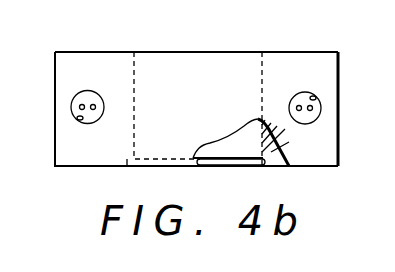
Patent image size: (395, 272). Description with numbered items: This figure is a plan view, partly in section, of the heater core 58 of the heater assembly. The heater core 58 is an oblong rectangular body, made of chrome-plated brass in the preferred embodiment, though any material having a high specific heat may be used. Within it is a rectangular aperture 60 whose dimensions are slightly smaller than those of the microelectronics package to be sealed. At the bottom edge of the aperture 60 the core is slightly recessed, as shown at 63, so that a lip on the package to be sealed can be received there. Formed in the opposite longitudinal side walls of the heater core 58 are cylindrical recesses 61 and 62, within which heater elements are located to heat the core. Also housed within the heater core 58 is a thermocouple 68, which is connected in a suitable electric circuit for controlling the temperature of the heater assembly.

The heater core 58 is at (223, 52).
The rectangular aperture 60 is at (252, 66).
The cylindrical recess 61 is at (315, 97).
The cylindrical recess 62 is at (79, 119).
The recess 63 is at (250, 162).
The thermocouple 68 is at (198, 106).